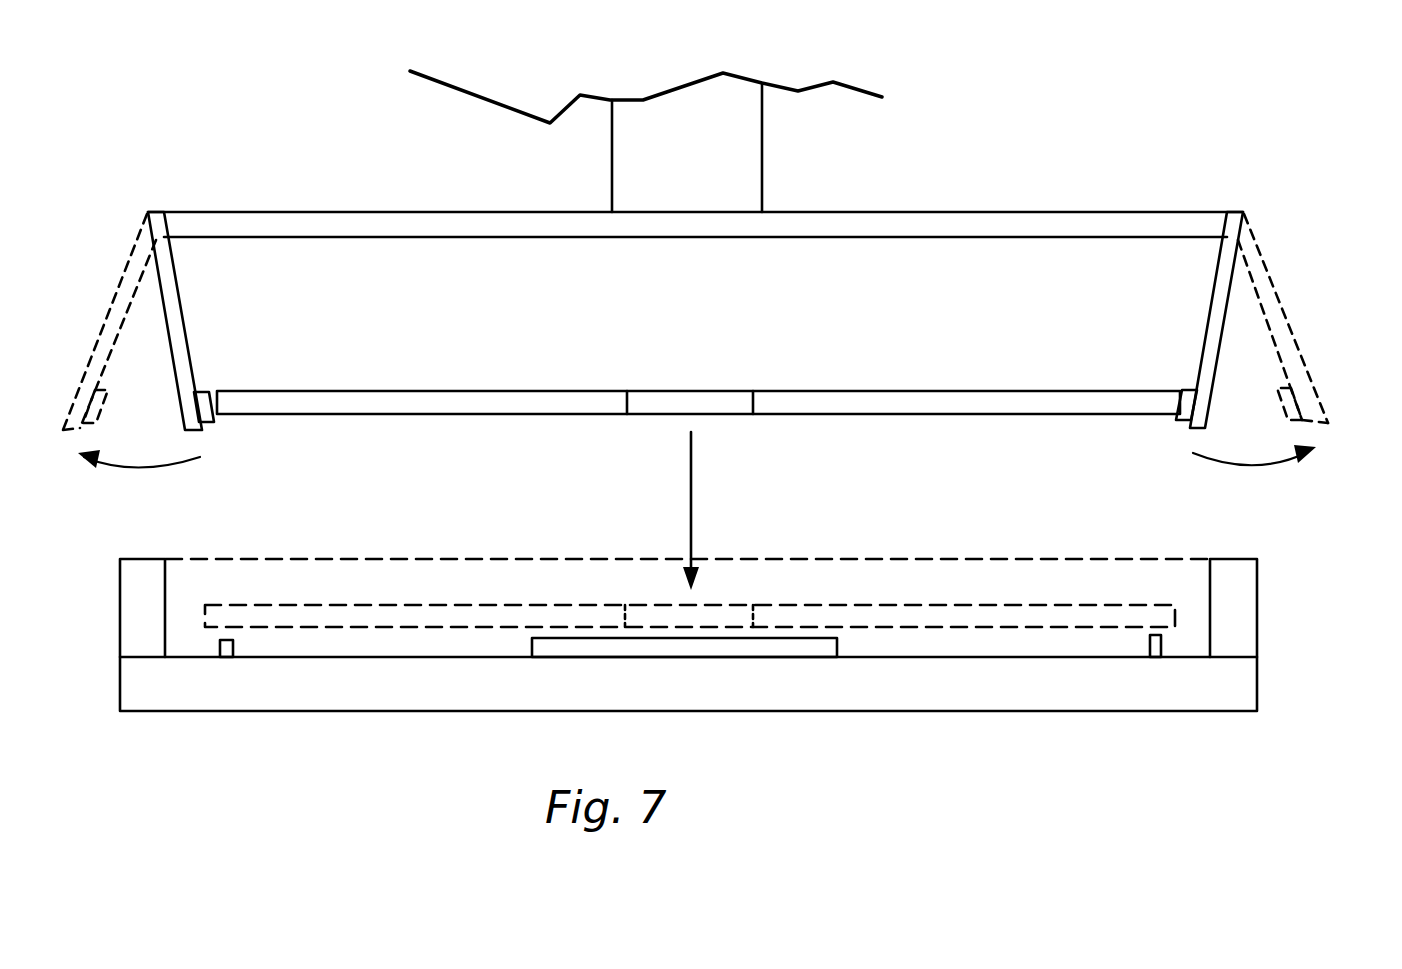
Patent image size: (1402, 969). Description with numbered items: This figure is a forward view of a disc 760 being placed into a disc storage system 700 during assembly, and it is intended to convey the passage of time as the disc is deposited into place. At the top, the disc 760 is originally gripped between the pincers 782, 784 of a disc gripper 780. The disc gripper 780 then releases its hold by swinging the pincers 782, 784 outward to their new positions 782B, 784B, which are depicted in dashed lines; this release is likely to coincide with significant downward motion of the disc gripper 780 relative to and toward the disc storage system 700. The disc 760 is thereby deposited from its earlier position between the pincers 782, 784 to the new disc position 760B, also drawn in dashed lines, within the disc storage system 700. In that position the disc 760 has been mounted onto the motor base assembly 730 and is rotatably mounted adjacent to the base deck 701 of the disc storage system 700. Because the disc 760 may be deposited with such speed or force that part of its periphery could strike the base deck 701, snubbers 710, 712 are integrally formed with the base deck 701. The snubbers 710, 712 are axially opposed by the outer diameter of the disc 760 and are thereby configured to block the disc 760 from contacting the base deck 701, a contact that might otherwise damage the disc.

The disc storage system 700 is at (231, 190).
The base deck 701 is at (1257, 681).
The snubber 710 is at (233, 646).
The snubber 712 is at (1162, 645).
The motor base assembly 730 is at (837, 643).
The disc 760 is at (947, 414).
The new disc position 760B is at (885, 604).
The disc gripper 780 is at (1018, 198).
The pincer 782 is at (187, 342).
The pincer new position 782B is at (93, 355).
The pincer 784 is at (1207, 320).
The pincer new position 784B is at (1312, 370).